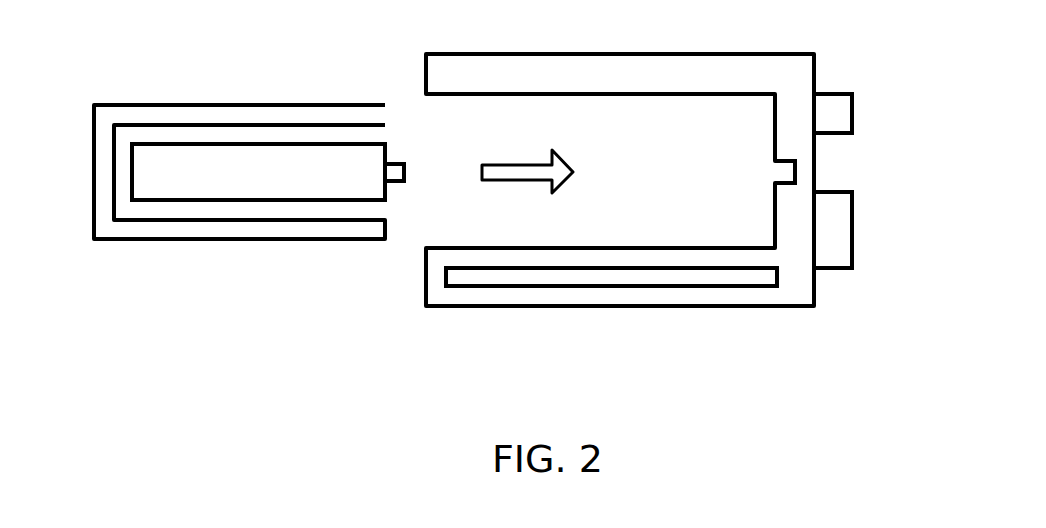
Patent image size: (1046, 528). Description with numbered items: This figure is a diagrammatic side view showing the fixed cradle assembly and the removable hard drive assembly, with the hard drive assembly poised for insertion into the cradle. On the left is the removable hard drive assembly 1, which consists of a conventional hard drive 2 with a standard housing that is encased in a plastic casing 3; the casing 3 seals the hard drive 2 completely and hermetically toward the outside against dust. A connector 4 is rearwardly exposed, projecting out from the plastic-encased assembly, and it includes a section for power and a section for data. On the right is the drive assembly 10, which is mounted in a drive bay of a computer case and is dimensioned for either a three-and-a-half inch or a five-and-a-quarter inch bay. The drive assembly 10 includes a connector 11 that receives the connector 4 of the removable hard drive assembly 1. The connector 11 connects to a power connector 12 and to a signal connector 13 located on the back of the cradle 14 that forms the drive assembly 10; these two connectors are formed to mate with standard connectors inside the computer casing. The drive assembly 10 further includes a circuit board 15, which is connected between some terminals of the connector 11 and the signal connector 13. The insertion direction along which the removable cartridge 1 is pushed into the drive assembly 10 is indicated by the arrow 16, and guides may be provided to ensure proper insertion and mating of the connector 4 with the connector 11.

The removable hard drive assembly 1 is at (275, 192).
The hard drive 2 is at (307, 143).
The plastic casing 3 is at (230, 110).
The connector 4 is at (408, 170).
The drive assembly 10 is at (628, 190).
The connector 11 is at (780, 168).
The power connector 12 is at (848, 113).
The signal connector 13 is at (848, 227).
The cradle 14 is at (560, 55).
The circuit board 15 is at (622, 282).
The arrow 16 is at (515, 173).